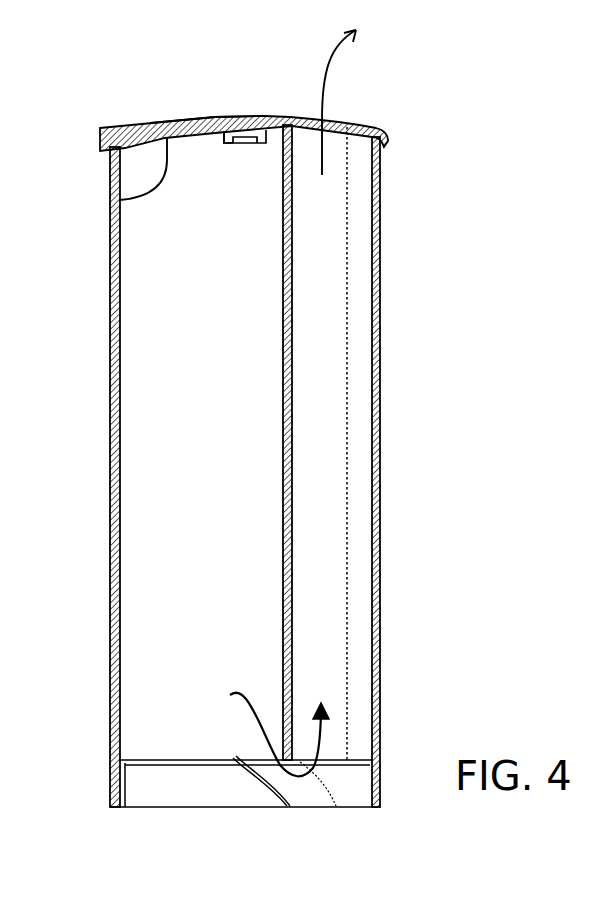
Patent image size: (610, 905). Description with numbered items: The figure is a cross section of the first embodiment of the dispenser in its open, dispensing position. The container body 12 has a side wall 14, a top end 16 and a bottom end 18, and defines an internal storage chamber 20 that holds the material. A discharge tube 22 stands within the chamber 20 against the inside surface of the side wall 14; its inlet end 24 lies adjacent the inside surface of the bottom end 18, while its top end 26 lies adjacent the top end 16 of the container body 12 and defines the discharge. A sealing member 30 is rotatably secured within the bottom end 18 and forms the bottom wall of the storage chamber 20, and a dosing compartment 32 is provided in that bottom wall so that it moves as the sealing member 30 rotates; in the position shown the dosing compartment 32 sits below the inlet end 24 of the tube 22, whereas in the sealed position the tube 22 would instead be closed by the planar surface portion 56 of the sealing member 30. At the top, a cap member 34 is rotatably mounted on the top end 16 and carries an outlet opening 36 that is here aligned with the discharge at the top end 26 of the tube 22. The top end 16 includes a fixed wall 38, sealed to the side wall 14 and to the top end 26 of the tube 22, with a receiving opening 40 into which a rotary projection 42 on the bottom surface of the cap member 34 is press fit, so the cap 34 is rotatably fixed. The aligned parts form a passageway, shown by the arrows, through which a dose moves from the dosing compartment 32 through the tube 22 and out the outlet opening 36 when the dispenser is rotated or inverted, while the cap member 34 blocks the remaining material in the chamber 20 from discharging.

The container body 12 is at (117, 316).
The side wall 14 is at (117, 388).
The top end 16 is at (106, 157).
The bottom end 18 is at (107, 786).
The internal storage chamber 20 is at (224, 437).
The discharge tube 22 is at (287, 613).
The inlet end 24 is at (355, 740).
The top end of the tube 26 is at (357, 160).
The sealing member 30 is at (191, 752).
The dosing compartment 32 is at (355, 773).
The cap member 34 is at (194, 121).
The outlet opening 36 is at (369, 101).
The fixed wall 38 is at (120, 200).
The receiving opening 40 is at (214, 142).
The rotary projection 42 is at (248, 150).
The planar surface portion 56 is at (236, 740).